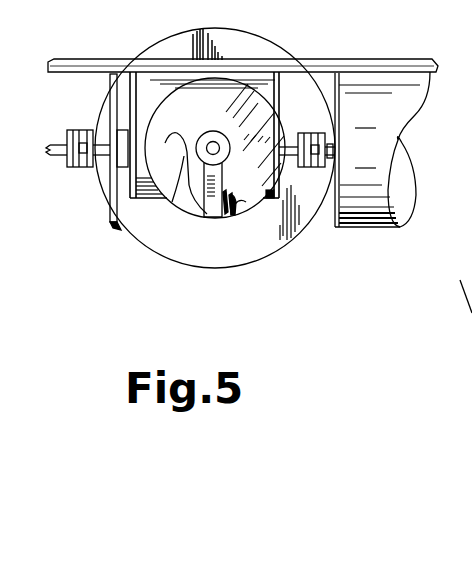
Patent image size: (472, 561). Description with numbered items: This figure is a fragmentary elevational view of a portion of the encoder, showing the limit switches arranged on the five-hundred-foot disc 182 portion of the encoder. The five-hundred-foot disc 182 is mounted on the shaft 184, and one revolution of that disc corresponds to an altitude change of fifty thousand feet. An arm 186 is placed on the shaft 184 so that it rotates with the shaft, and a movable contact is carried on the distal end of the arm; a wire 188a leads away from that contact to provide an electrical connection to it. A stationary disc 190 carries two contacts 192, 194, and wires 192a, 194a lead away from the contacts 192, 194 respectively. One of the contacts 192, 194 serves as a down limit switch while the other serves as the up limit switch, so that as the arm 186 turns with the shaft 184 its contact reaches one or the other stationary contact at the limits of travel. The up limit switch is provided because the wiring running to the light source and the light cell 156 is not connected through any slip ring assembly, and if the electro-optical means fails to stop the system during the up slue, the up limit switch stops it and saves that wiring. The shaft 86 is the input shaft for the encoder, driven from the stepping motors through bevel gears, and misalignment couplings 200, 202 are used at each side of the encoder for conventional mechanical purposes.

The 500 foot disc 182 is at (268, 47).
The stationary disc 190 is at (209, 111).
The shaft 184 is at (212, 131).
The arm 186 is at (215, 180).
The wire 188a is at (190, 197).
The contact 192 is at (221, 216).
The wire 192a is at (222, 218).
The wire 194a is at (232, 218).
The contact 194 is at (238, 220).
The misalignment coupling 200 is at (313, 183).
The misalignment coupling 202 is at (79, 180).
The shaft 86 is at (333, 152).
The light cell 156 is at (471, 336).